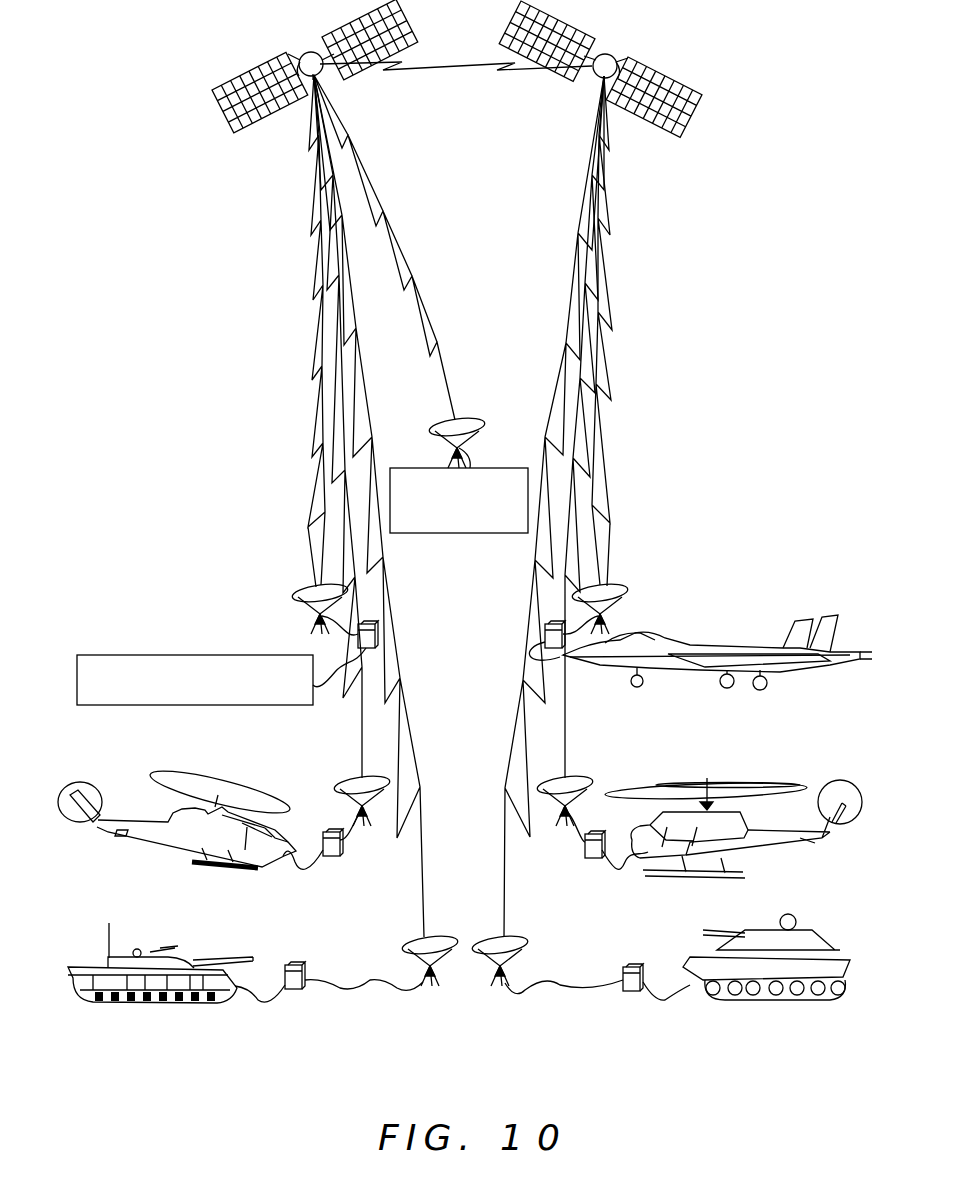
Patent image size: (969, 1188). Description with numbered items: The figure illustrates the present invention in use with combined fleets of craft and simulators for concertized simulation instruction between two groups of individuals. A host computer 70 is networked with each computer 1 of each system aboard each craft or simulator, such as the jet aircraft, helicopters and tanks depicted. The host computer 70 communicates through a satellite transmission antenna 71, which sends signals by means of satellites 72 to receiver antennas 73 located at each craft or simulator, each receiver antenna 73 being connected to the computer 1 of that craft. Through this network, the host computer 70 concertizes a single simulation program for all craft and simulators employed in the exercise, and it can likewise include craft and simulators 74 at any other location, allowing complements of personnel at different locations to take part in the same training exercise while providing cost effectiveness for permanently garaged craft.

The satellites 72 is at (304, 56).
The satellite transmission antenna 71 is at (463, 421).
The host computer 70 is at (410, 470).
The receiver antennas 73 is at (310, 590).
The craft and simulators at any other location 74 is at (196, 656).
The computer 1 is at (377, 634).